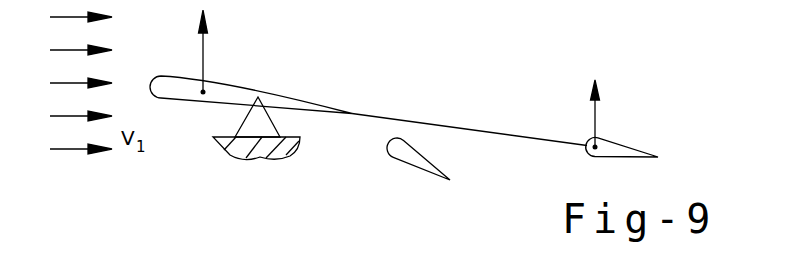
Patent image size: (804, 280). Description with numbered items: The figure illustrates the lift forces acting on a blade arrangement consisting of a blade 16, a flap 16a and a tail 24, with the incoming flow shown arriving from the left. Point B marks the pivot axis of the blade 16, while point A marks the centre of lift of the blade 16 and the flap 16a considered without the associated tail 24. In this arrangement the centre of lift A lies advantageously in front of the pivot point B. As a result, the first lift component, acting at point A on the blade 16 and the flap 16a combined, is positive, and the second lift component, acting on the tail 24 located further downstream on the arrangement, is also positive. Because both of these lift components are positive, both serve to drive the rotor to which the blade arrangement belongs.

The blade 16 is at (304, 105).
The flap 16a is at (405, 162).
The tail 24 is at (617, 150).